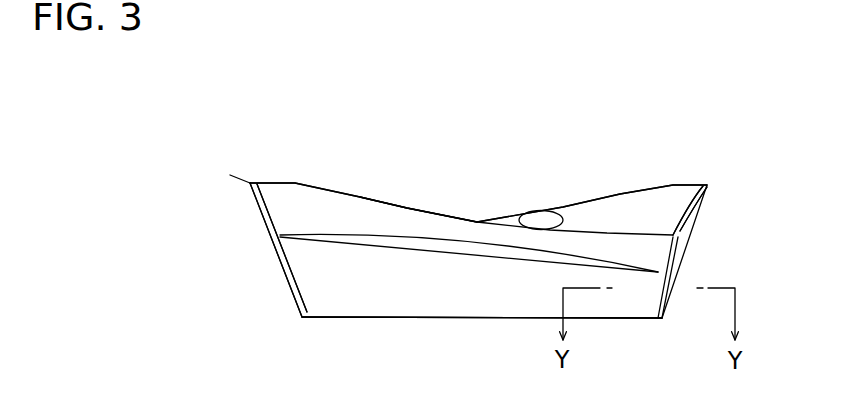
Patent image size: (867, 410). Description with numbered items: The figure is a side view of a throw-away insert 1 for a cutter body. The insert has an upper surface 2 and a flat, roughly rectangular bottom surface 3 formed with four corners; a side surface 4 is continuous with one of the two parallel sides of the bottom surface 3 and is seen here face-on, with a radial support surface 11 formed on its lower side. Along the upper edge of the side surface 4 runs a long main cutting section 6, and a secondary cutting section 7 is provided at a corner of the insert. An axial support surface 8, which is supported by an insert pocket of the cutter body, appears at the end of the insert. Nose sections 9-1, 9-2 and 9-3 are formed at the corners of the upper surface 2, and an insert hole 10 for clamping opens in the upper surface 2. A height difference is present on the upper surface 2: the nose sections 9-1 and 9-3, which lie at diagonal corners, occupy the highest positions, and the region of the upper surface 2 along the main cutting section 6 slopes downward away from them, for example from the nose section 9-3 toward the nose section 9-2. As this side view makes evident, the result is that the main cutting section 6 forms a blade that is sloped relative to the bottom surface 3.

The throw-away insert 1 is at (585, 163).
The upper surface 2 is at (622, 210).
The bottom surface 3 is at (630, 322).
The side surface 4 is at (332, 213).
The main cutting section 6 is at (407, 208).
The secondary cutting section 7 is at (230, 175).
The axial support surface 8 is at (678, 257).
The nose section 9-1 is at (707, 183).
The nose section 9-2 is at (683, 232).
The nose section 9-3 is at (255, 165).
The insert hole 10 is at (527, 220).
The radial support surface 11 is at (402, 297).